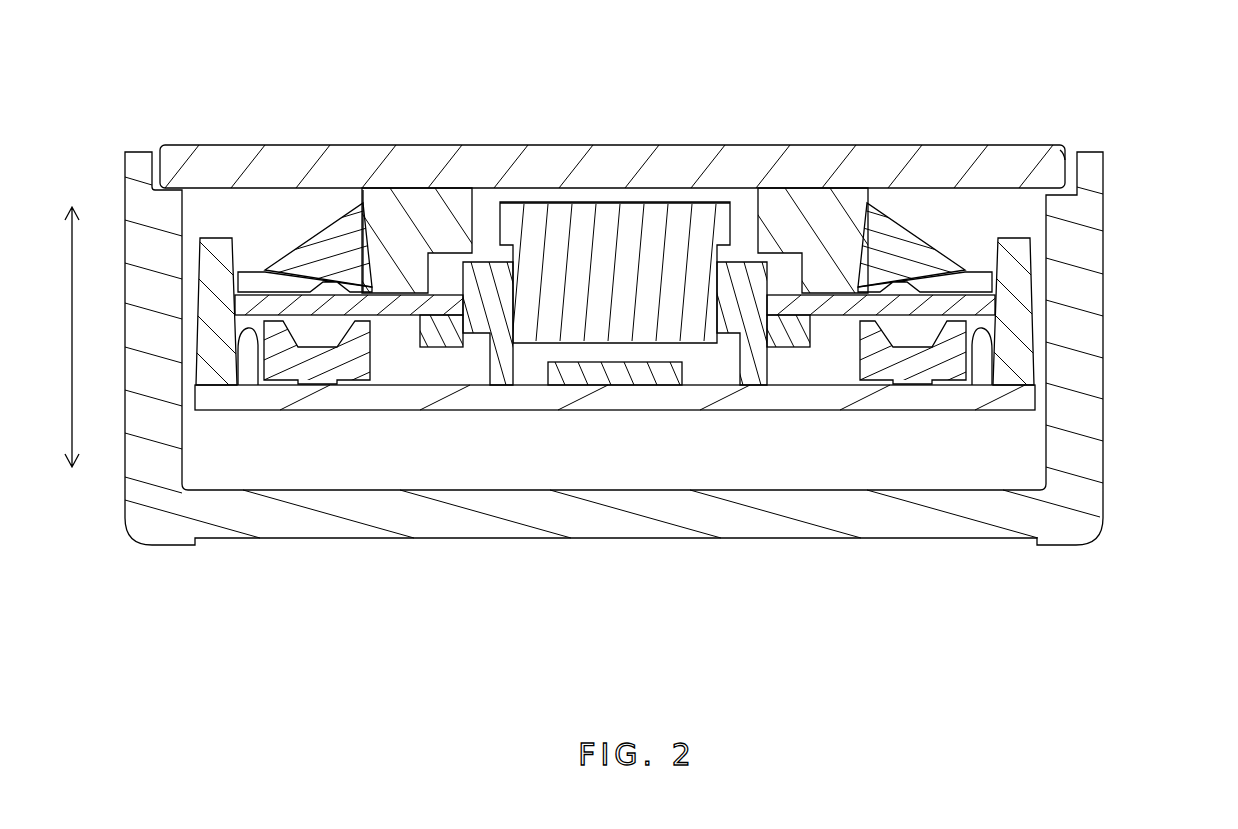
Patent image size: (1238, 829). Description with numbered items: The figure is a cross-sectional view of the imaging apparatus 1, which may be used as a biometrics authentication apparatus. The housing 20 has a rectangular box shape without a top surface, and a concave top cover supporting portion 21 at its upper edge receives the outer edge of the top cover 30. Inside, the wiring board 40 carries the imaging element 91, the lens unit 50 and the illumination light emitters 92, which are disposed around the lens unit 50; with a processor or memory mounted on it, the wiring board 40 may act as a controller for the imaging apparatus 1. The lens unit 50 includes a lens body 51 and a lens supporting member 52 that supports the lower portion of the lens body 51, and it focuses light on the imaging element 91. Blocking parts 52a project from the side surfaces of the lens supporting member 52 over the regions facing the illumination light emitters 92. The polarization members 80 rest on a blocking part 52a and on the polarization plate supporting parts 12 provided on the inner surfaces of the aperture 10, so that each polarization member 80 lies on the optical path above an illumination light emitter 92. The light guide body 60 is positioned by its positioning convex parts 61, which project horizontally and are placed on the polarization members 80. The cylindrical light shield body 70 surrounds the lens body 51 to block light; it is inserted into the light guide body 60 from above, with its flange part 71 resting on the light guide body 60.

The imaging apparatus 1 is at (105, 133).
The aperture 10 is at (217, 238).
The polarization plate supporting part 12 is at (257, 330).
The housing 20 is at (1106, 251).
The top cover supporting portion 21 is at (1063, 147).
The top cover 30 is at (936, 152).
The wiring board 40 is at (407, 407).
The lens unit 50 is at (603, 202).
The lens body 51 is at (675, 205).
The lens supporting member 52 is at (753, 385).
The blocking part 52a is at (442, 337).
The light guide body 60 is at (330, 227).
The positioning convex part 61 is at (256, 272).
The light shield body 70 is at (415, 188).
The flange part 71 is at (363, 164).
The polarization member 80 is at (403, 302).
The imaging element 91 is at (607, 385).
The illumination light emitter 92 is at (327, 370).